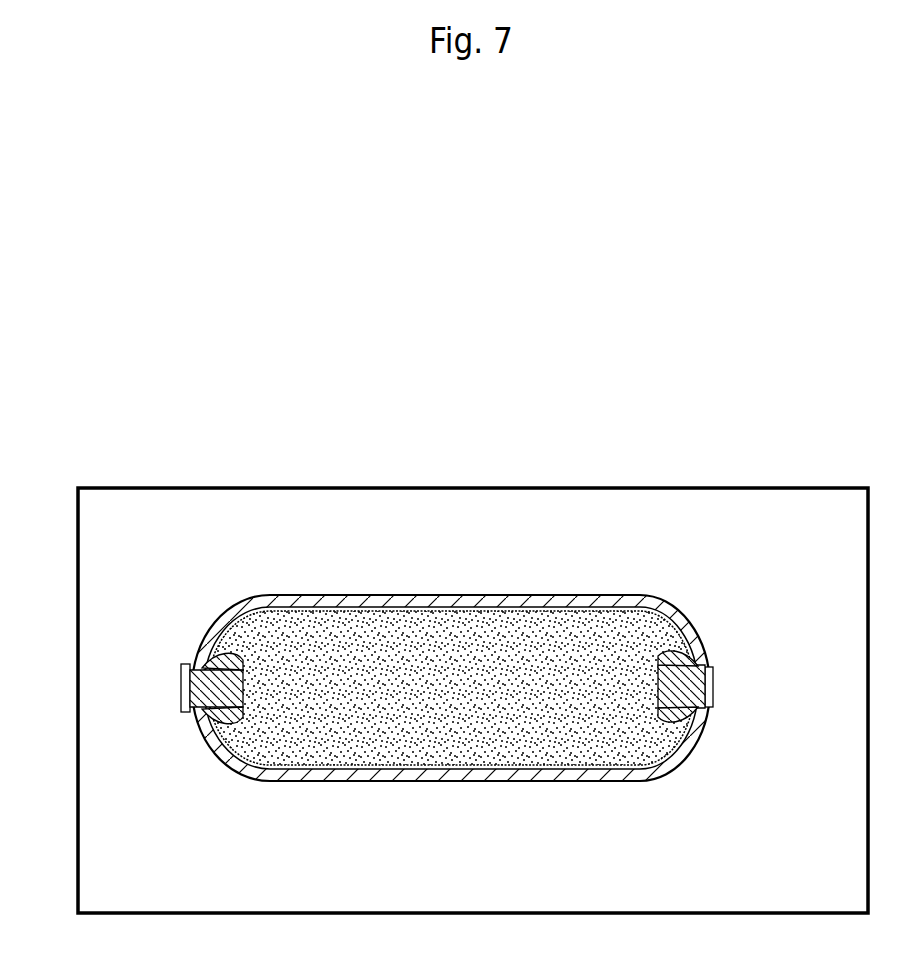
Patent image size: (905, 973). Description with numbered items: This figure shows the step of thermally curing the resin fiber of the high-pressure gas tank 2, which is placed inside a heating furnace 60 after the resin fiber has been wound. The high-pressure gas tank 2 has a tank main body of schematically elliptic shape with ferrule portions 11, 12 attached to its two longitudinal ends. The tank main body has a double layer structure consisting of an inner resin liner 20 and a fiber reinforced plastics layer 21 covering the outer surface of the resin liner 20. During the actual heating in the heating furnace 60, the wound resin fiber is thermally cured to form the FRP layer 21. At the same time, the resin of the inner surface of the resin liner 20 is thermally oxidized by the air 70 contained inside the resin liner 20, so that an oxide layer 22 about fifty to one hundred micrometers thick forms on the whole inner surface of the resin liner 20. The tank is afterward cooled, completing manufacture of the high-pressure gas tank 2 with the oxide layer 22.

The high-pressure gas tank 2 is at (568, 578).
The ferrule portion 11 is at (181, 683).
The ferrule portion 12 is at (713, 685).
The resin liner 20 is at (360, 605).
The FRP layer 21 is at (442, 600).
The oxide layer 22 is at (584, 759).
The heating furnace 60 is at (747, 486).
The air 70 is at (470, 745).